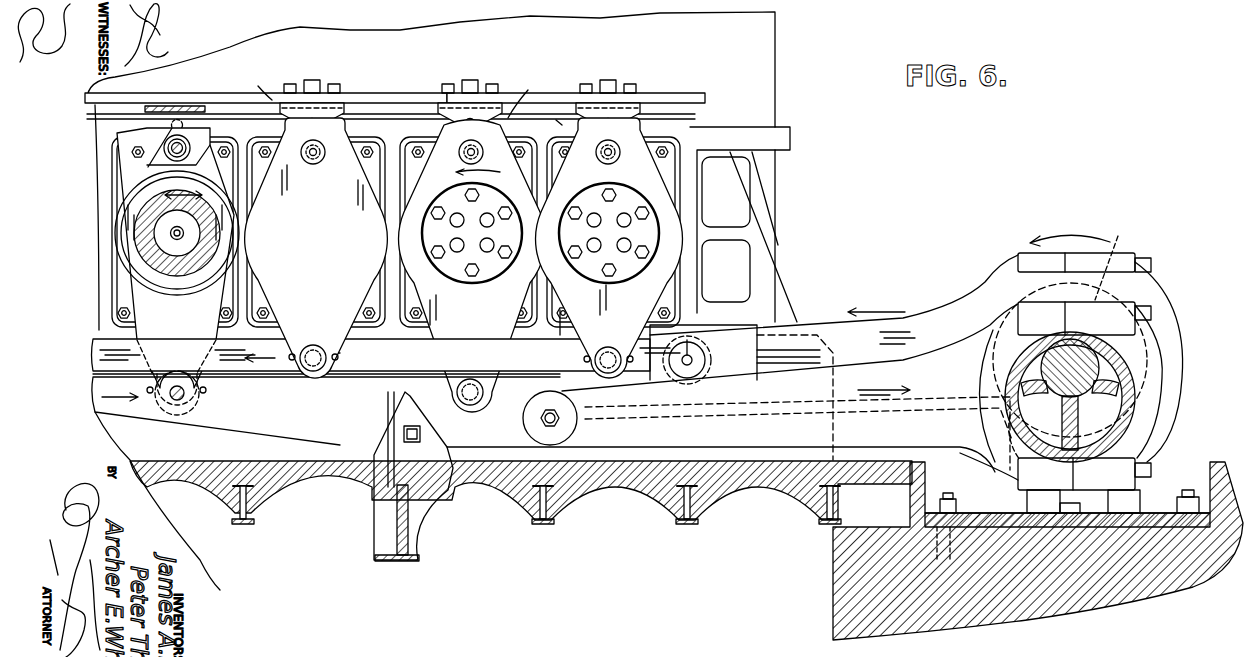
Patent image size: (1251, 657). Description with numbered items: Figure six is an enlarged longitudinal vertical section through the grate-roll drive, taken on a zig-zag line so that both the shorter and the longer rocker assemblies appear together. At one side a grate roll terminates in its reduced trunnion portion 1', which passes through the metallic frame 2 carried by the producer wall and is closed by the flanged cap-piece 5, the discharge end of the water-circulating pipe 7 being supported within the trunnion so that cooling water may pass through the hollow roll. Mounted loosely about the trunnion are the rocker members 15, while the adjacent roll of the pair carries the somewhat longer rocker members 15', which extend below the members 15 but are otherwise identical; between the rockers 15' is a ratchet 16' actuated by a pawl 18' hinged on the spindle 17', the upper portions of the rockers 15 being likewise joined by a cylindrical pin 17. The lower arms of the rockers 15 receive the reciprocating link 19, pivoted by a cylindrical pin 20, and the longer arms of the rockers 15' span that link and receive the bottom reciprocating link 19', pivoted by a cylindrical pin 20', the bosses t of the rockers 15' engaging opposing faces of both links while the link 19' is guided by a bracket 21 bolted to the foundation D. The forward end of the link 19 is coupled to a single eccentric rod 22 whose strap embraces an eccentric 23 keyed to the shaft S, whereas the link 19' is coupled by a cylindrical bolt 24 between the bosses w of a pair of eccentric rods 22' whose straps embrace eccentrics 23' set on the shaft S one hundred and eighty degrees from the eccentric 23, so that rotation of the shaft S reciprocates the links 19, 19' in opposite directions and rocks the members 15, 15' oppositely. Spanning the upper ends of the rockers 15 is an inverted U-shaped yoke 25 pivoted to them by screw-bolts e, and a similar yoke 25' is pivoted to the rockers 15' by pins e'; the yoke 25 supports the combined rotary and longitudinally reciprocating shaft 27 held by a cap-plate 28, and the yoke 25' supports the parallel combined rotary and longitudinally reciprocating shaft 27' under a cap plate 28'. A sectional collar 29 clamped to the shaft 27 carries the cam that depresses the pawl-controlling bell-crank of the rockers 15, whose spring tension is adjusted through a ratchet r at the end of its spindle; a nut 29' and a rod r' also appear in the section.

The trunnion portion 1' is at (225, 236).
The metallic frame 2 is at (690, 142).
The flanged cap-piece 5 is at (492, 272).
The water-circulating pipe 7 is at (170, 234).
The rocker member 15 is at (464, 267).
The rocker member 15' is at (339, 266).
The ratchet 16' is at (149, 233).
The cylindrical pin 17 is at (460, 157).
The spindle 17' is at (296, 154).
The pawl 18' is at (101, 156).
The reciprocating link 19 is at (360, 372).
The reciprocating link 19' is at (326, 483).
The cylindrical pin 20 is at (463, 372).
The cylindrical pin 20' is at (319, 412).
The bracket 21 is at (386, 395).
The eccentric rod 22 is at (856, 347).
The eccentric rod 22' is at (992, 551).
The eccentric 23 is at (1119, 256).
The eccentric 23' is at (986, 437).
The cylindrical bolt 24 is at (540, 418).
The inverted U-shaped yoke 25 is at (485, 99).
The yoke 25' is at (338, 86).
The combined rotary and longitudinally reciprocating shaft 27 is at (476, 54).
The combined rotary and longitudinally reciprocating shaft 27' is at (266, 78).
The cap-plate 28 is at (460, 71).
The cap plate 28' is at (494, 68).
The sectional collar 29 is at (482, 62).
The nut 29' is at (488, 64).
The screw-bolt e is at (460, 83).
The pin e' is at (326, 85).
The ratchet r is at (261, 80).
The rod r' is at (537, 97).
The boss t is at (168, 406).
The shaft S is at (1010, 356).
The foundation D is at (488, 500).
The boss w is at (573, 496).